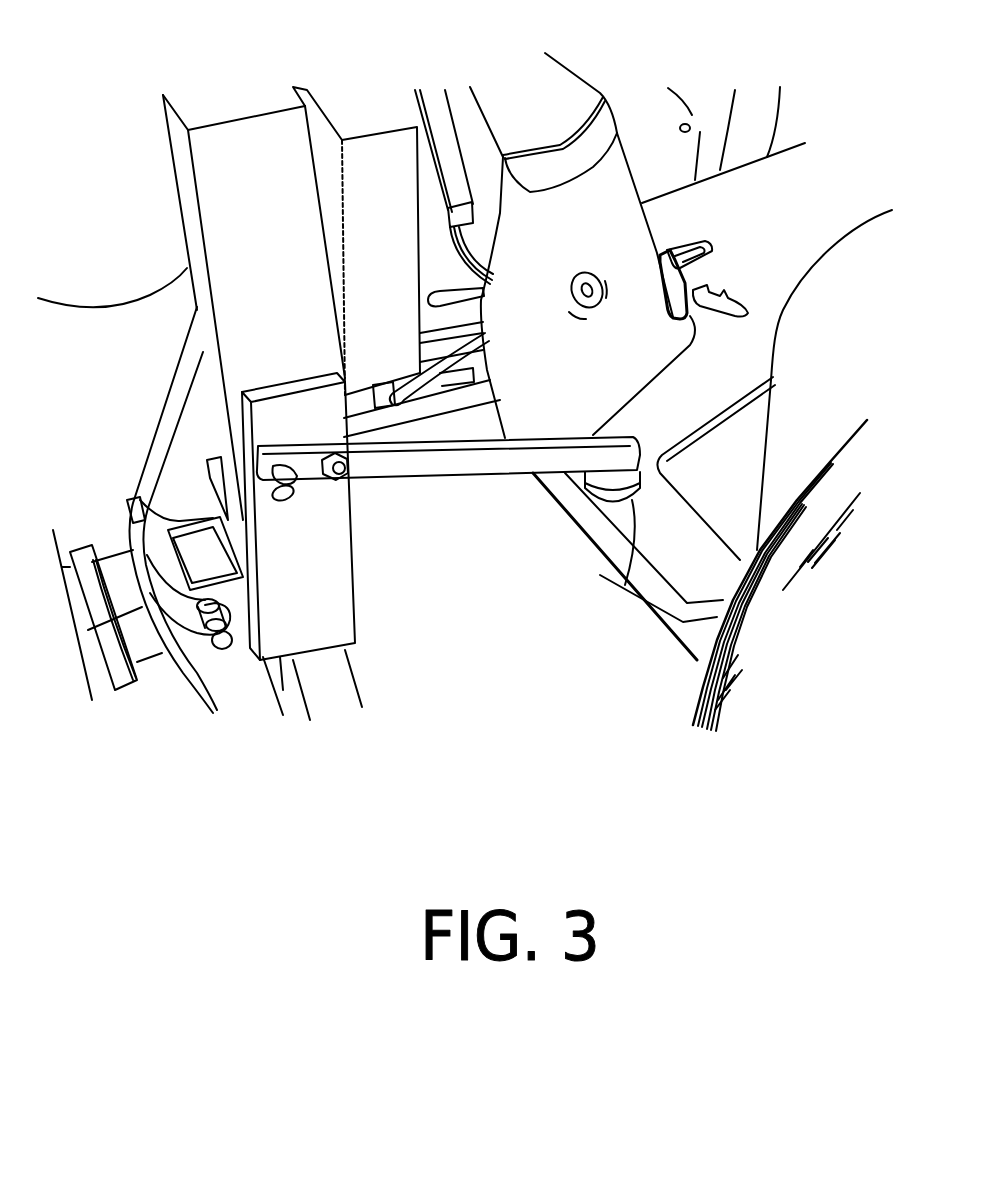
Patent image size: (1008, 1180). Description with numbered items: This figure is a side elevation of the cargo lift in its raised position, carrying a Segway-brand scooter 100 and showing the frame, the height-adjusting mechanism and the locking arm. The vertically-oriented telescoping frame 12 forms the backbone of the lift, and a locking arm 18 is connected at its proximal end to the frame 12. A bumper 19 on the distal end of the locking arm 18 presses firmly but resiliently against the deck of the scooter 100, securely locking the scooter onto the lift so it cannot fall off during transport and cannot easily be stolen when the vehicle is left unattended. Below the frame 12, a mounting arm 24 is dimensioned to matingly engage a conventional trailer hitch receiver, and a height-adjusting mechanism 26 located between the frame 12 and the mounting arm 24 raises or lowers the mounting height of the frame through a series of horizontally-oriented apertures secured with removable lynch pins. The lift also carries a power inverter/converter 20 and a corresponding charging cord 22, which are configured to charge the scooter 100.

The frame 12 is at (235, 137).
The power inverter/converter 20 is at (375, 162).
The charging cord 22 is at (712, 262).
The scooter 100 is at (840, 445).
The bumper 19 is at (637, 583).
The locking arm 18 is at (490, 473).
The height-adjusting mechanism 26 is at (227, 657).
The mounting arm 24 is at (157, 648).